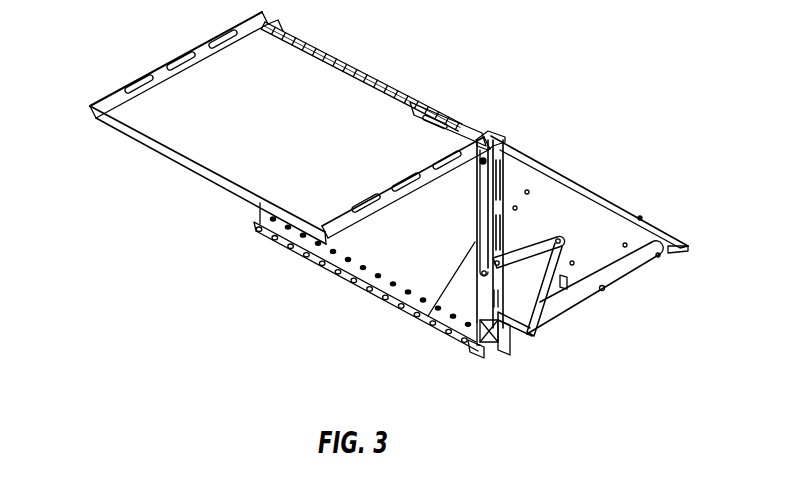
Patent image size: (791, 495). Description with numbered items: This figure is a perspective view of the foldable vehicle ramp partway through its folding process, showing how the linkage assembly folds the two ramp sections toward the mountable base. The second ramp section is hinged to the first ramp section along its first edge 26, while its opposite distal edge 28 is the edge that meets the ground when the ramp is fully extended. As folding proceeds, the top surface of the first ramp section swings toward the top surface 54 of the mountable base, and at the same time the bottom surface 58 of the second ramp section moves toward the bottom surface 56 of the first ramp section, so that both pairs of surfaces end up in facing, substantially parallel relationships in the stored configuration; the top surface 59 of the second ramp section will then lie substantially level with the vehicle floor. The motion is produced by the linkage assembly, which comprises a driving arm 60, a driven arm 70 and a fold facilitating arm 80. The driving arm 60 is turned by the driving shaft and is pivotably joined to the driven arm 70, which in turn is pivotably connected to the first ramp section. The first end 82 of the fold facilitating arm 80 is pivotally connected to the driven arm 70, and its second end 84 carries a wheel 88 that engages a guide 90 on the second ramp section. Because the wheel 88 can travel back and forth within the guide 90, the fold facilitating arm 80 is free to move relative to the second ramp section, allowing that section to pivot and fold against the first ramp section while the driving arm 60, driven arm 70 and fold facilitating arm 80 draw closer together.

The first edge 26 is at (333, 62).
The distal edge 28 is at (187, 152).
The top surface 54 is at (611, 255).
The bottom surface 56 is at (454, 266).
The bottom surface 58 is at (128, 132).
The top surface 59 is at (328, 151).
The driving arm 60 is at (550, 290).
The driven arm 70 is at (537, 243).
The fold facilitating arm 80 is at (428, 318).
The first end 82 is at (500, 350).
The second end 84 is at (476, 184).
The wheel 88 is at (515, 157).
The guide 90 is at (489, 143).